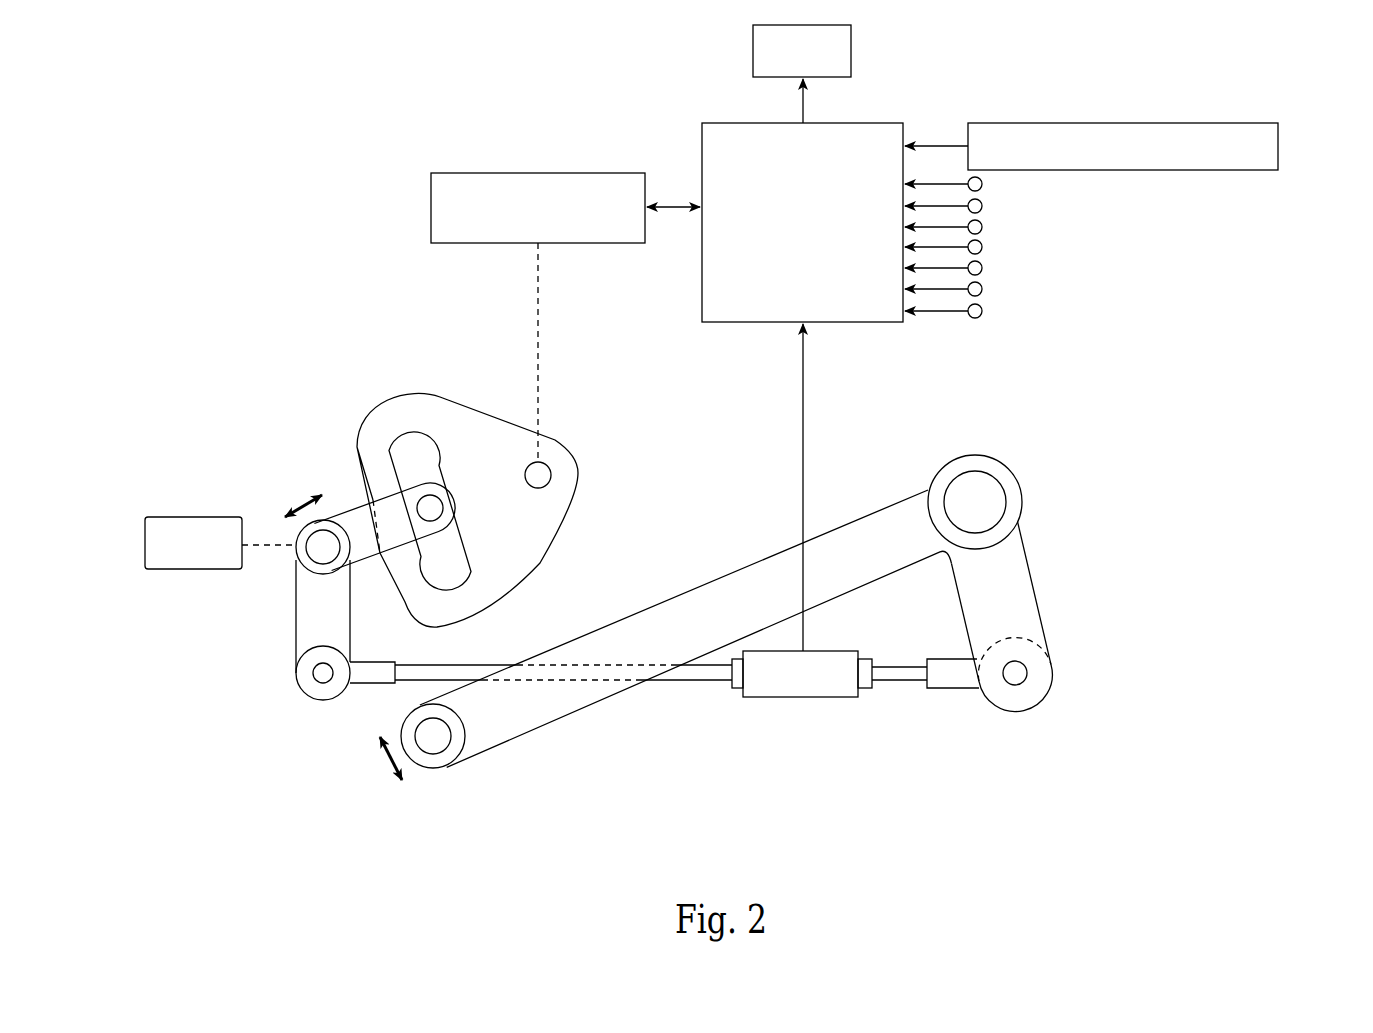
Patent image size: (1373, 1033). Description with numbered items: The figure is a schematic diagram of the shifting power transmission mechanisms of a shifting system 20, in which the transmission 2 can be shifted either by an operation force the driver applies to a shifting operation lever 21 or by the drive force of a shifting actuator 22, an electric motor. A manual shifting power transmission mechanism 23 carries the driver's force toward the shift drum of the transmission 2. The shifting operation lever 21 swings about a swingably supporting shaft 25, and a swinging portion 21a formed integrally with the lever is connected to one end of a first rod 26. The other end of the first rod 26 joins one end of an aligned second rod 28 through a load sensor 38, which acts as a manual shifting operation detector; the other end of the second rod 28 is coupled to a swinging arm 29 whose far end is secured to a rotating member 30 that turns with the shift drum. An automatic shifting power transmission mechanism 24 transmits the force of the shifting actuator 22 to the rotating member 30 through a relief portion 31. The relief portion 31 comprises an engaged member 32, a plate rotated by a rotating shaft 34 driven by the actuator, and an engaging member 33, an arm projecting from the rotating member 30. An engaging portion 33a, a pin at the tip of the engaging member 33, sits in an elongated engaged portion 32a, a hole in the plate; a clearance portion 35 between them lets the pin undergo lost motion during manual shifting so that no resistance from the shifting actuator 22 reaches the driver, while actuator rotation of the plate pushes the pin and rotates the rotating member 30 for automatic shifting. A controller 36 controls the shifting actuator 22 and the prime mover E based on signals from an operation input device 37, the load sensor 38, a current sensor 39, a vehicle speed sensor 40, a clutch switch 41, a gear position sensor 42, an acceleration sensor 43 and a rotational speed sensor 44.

The transmission 2 is at (143, 545).
The shifting system 20 is at (336, 318).
The shifting operation lever 21 is at (527, 731).
The swinging portion 21a is at (1025, 597).
The shifting actuator 22 is at (580, 170).
The manual shifting power transmission mechanism 23 is at (710, 716).
The automatic shifting power transmission mechanism 24 is at (403, 323).
The swingably supporting shaft 25 is at (993, 502).
The first rod 26 is at (902, 683).
The second rod 28 is at (690, 685).
The swinging arm 29 is at (297, 613).
The rotating member 30 is at (322, 552).
The relief portion 31 is at (389, 418).
The engaged member 32 is at (553, 533).
The engaged portion 32a is at (417, 440).
The engaging member 33 is at (357, 503).
The engaging portion 33a is at (428, 503).
The rotating shaft 34 is at (543, 477).
The clearance portion 35 is at (460, 542).
The controller 36 is at (740, 323).
The operation input device 37 is at (1280, 147).
The load sensor 38 is at (982, 184).
The current sensor 39 is at (982, 206).
The vehicle speed sensor 40 is at (982, 227).
The clutch switch 41 is at (982, 247).
The gear position sensor 42 is at (982, 268).
The acceleration sensor 43 is at (982, 289).
The rotational speed sensor 44 is at (982, 311).
The prime mover E is at (851, 50).